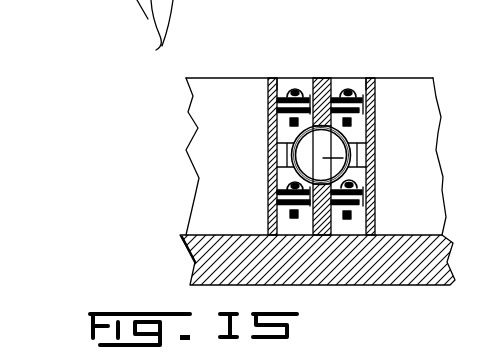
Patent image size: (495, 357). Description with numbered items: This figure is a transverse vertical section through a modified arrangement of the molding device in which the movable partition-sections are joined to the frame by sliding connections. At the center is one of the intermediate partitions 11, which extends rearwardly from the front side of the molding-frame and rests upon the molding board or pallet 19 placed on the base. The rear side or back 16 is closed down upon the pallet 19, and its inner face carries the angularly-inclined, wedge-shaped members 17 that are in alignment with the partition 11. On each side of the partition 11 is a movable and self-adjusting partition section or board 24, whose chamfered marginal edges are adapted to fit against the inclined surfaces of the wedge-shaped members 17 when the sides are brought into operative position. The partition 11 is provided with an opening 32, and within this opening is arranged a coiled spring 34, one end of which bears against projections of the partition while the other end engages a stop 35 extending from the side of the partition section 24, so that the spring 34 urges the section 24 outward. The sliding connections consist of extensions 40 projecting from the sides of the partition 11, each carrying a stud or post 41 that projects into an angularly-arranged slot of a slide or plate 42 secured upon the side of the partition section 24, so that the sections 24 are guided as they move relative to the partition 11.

The intermediate partition 11 is at (321, 78).
The rear side 16 is at (196, 128).
The wedge-shaped member 17 is at (288, 88).
The pallet 19 is at (428, 258).
The partition section 24 is at (268, 80).
The opening 32 is at (358, 166).
The coiled spring 34 is at (293, 149).
The stop 35 is at (296, 161).
The extension 40 is at (290, 109).
The stud 41 is at (291, 93).
The slide 42 is at (272, 100).